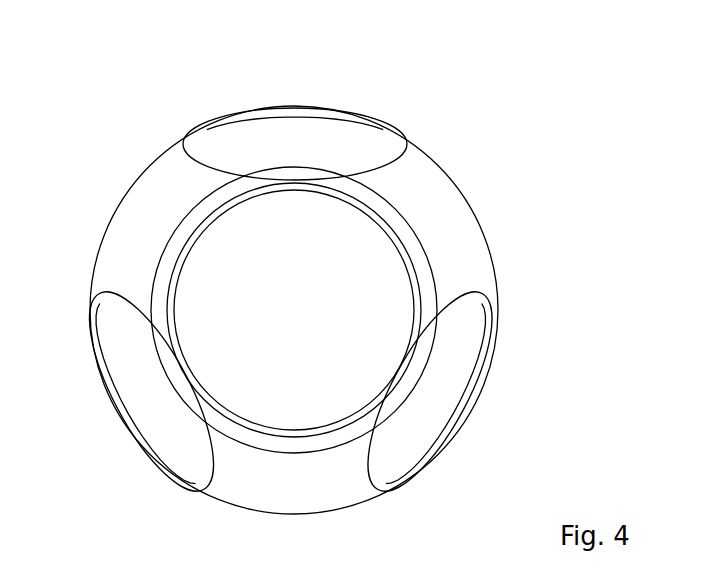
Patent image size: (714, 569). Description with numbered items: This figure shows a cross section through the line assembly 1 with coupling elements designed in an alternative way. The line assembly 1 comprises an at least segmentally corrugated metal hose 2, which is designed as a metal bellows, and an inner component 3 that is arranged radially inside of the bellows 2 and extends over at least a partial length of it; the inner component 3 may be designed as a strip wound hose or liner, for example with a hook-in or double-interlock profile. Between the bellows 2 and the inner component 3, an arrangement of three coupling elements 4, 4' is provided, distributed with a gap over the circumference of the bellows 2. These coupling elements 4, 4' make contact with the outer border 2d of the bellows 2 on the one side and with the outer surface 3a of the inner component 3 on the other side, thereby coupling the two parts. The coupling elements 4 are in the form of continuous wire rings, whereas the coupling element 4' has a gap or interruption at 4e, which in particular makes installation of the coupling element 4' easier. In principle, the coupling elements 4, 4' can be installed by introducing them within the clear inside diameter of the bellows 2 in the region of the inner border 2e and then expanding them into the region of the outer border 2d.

The line assembly 1 is at (503, 185).
The metal hose 2 is at (447, 167).
The outer border 2d is at (150, 167).
The inner border 2e is at (152, 233).
The inner component 3 is at (428, 260).
The outer surface 3a is at (416, 288).
The coupling element 4 is at (299, 307).
The gap 4e is at (293, 109).
The coupling element 4' is at (290, 260).